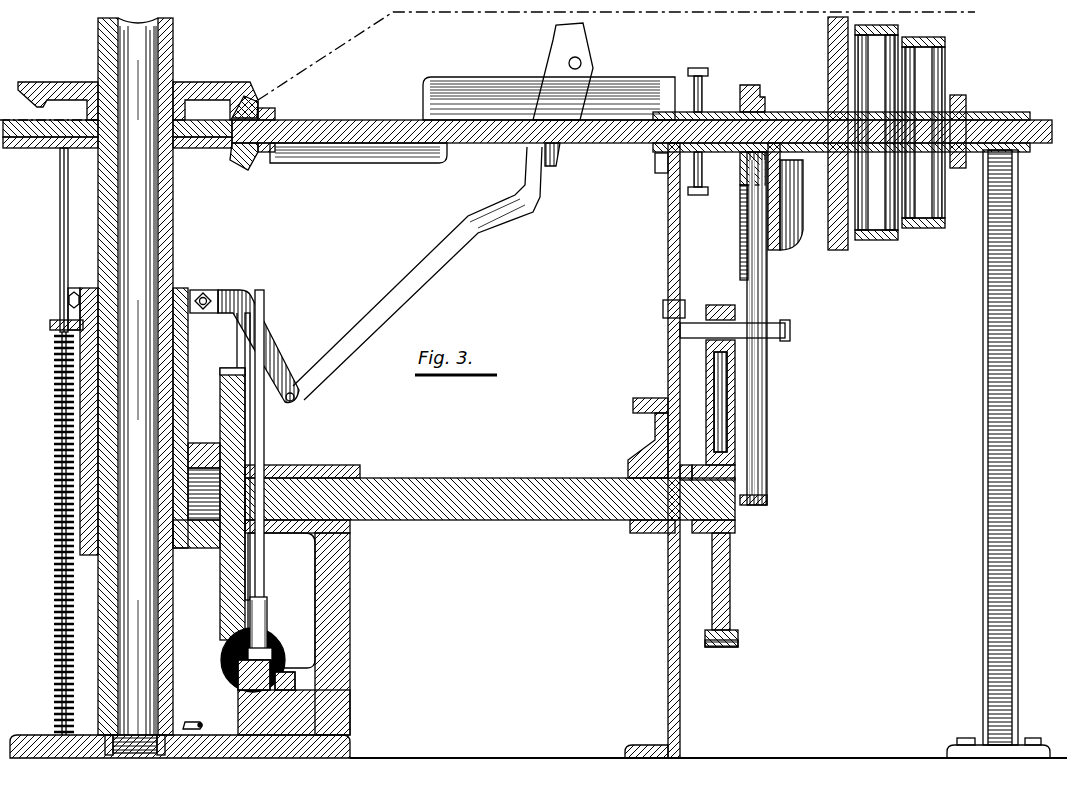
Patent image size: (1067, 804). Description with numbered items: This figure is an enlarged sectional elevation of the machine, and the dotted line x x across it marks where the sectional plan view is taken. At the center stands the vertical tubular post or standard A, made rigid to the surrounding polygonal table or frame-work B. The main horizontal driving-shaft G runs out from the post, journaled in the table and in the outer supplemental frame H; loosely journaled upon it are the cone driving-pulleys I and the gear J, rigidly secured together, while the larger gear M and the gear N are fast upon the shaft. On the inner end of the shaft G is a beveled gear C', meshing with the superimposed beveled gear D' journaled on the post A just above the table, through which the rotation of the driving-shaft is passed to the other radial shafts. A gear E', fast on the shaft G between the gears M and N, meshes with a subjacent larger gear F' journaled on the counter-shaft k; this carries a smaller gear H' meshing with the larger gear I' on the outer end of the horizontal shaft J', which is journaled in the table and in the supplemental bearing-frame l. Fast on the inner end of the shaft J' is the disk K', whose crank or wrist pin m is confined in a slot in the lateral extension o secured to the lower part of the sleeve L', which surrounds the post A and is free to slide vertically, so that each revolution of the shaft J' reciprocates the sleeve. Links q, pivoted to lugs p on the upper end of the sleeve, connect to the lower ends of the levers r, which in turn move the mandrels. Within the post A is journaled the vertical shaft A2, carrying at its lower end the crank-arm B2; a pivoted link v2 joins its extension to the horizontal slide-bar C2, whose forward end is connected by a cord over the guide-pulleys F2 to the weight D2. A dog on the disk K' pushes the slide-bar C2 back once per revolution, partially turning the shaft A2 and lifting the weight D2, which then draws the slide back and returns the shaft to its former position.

The dotted section line x is at (496, 62).
The polygonal table or frame-work B is at (42, 148).
The central vertical tubular post or standard A is at (174, 215).
The vertical shaft A2 is at (146, 250).
The crank-arm B2 is at (152, 758).
The sleeve L' is at (119, 511).
The superimposed beveled gear D' is at (138, 90).
The beveled gear C' is at (263, 127).
The main horizontal driving-shaft G is at (632, 143).
The lever r is at (440, 250).
The lug p is at (205, 292).
The link q is at (270, 345).
The disk K' is at (264, 476).
The lateral extension o is at (212, 450).
The crank or wrist pin m is at (204, 494).
The horizontal shaft J' is at (490, 508).
The supplemental bearing-frame l is at (348, 584).
The weight D2 is at (233, 668).
The guide-pulley F2 is at (270, 470).
The horizontal slide-bar C2 is at (232, 660).
The pivoted link v2 is at (238, 713).
The gear N is at (706, 76).
The gear E' is at (757, 167).
The larger gear F' is at (773, 324).
The larger gear M is at (838, 250).
The cone driving-pulley I is at (900, 148).
The gear J is at (958, 146).
The outer supplemental frame H is at (999, 454).
The smaller gear H' is at (699, 378).
The counter-shaft k is at (790, 331).
The larger gear I' is at (726, 583).